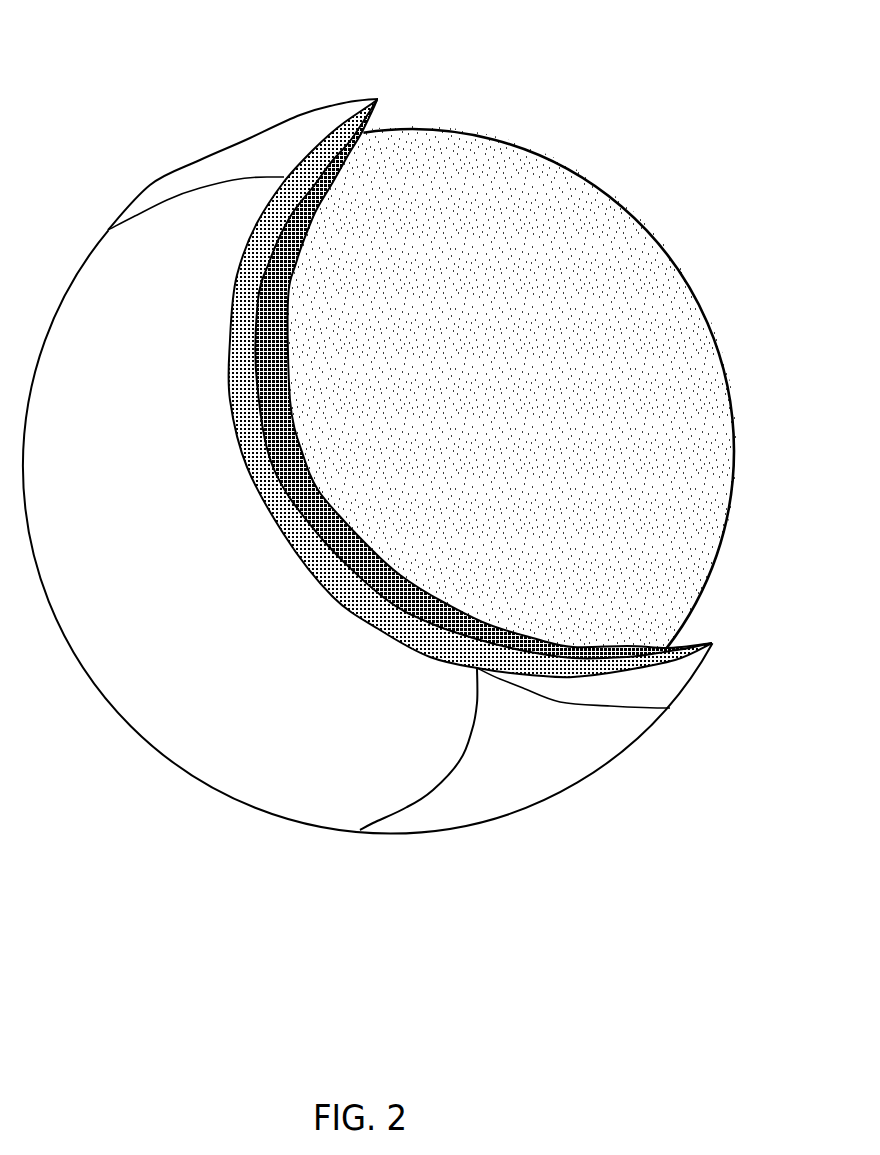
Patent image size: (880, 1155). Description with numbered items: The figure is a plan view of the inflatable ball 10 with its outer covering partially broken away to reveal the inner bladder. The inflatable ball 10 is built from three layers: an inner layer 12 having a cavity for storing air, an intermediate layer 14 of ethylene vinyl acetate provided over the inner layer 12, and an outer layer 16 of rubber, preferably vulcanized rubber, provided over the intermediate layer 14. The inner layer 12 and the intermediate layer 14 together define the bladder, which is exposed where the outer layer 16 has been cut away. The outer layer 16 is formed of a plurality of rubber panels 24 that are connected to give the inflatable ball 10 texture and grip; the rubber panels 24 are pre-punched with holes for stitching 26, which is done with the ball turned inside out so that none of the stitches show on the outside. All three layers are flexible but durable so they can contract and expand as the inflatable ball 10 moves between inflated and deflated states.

The inflatable ball 10 is at (159, 89).
The inner layer 12 is at (682, 229).
The intermediate layer 14 is at (378, 97).
The outer layer 16 is at (266, 845).
The rubber panels 24 is at (527, 780).
The stitching 26 is at (433, 790).